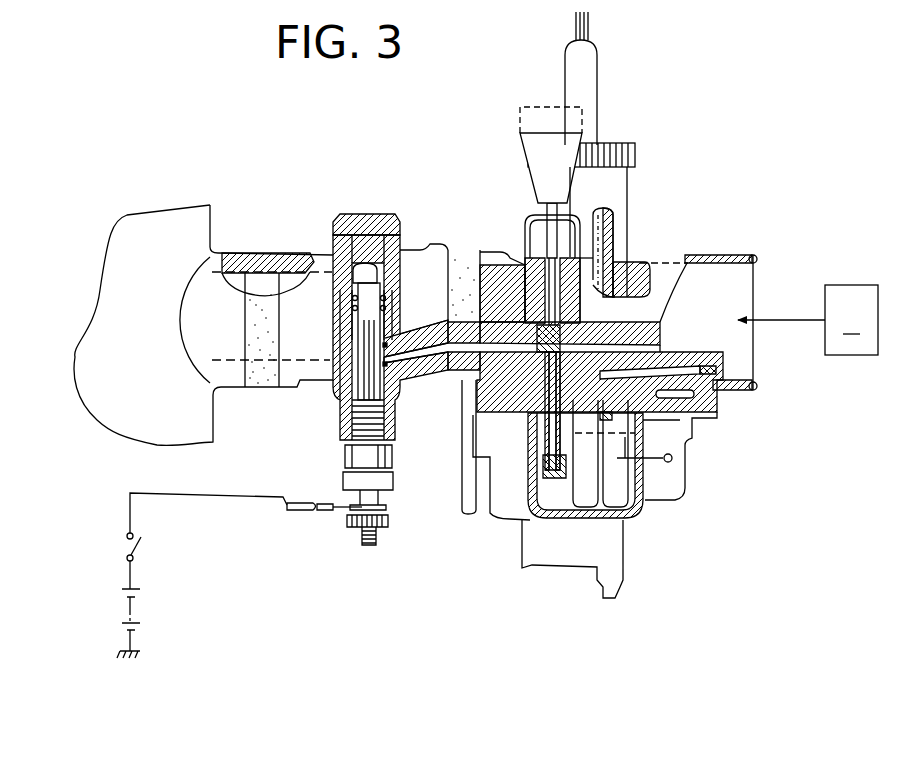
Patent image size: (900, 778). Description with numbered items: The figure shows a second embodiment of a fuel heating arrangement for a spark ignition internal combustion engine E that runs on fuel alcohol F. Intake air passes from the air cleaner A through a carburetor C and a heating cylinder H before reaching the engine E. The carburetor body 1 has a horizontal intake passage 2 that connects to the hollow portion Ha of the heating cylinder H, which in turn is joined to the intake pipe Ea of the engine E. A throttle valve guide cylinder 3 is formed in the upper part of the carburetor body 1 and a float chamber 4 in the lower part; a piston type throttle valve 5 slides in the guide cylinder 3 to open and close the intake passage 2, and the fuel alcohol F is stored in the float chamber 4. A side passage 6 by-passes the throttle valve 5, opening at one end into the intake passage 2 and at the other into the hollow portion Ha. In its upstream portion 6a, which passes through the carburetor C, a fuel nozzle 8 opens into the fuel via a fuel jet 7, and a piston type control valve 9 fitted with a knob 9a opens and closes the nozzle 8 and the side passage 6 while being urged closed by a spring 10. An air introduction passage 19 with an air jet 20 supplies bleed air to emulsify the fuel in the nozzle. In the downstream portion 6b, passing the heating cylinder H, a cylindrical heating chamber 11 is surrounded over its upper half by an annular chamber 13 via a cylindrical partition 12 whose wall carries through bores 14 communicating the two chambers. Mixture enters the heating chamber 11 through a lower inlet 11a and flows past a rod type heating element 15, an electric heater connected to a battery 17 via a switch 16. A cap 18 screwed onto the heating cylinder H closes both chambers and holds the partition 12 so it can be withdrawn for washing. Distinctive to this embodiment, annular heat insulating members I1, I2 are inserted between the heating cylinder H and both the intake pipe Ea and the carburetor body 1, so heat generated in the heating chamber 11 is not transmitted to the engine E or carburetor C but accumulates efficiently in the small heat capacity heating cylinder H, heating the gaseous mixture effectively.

The internal combustion engine E is at (142, 207).
The intake pipe Ea is at (240, 256).
The hollow portion Ha is at (306, 262).
The annular heat insulating member I1 is at (266, 256).
The annular heat insulating member I2 is at (466, 256).
The heating cylinder H is at (446, 254).
The carburetor C is at (682, 217).
The air cleaner A is at (808, 320).
The fuel alcohol F is at (590, 432).
The carburetor body 1 is at (493, 256).
The intake passage 2 is at (758, 268).
The throttle valve guide cylinder 3 is at (610, 186).
The float chamber 4 is at (638, 470).
The throttle valve 5 is at (606, 245).
The side passage 6 is at (664, 338).
The upstream portion 6a is at (649, 336).
The downstream portion 6b is at (404, 360).
The fuel jet 7 is at (557, 478).
The fuel nozzle 8 is at (562, 366).
The control valve 9 is at (546, 330).
The knob 9a is at (519, 134).
The spring 10 is at (526, 302).
The heating chamber 11 is at (340, 350).
The inlet 11a is at (416, 338).
The cylindrical partition 12 is at (386, 318).
The annular chamber 13 is at (340, 327).
The through bores 14 is at (335, 312).
The heating element 15 is at (369, 349).
The switch 16 is at (141, 546).
The battery 17 is at (138, 607).
The cap 18 is at (370, 214).
The air introduction passage 19 is at (648, 418).
The air jet 20 is at (722, 372).